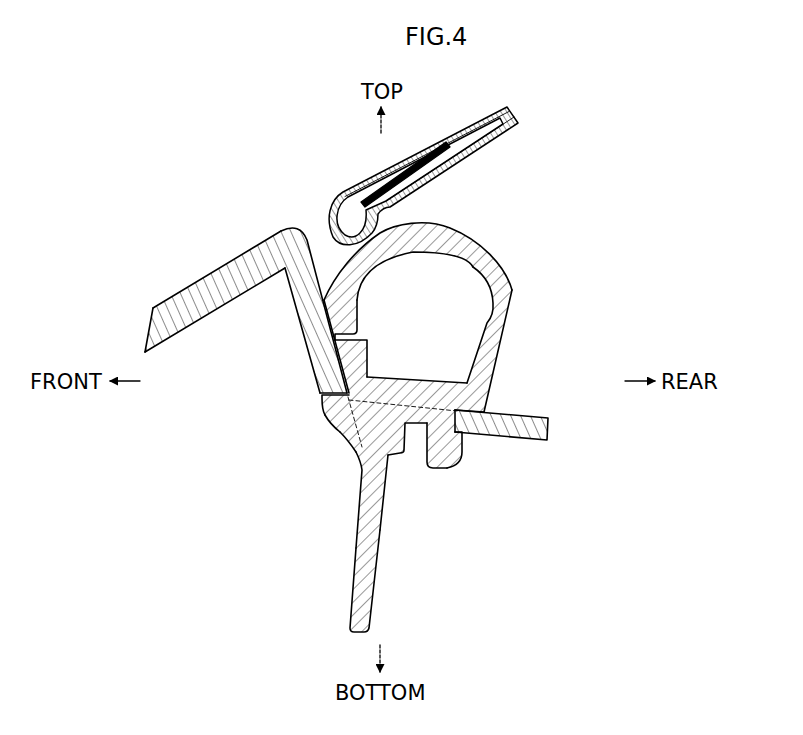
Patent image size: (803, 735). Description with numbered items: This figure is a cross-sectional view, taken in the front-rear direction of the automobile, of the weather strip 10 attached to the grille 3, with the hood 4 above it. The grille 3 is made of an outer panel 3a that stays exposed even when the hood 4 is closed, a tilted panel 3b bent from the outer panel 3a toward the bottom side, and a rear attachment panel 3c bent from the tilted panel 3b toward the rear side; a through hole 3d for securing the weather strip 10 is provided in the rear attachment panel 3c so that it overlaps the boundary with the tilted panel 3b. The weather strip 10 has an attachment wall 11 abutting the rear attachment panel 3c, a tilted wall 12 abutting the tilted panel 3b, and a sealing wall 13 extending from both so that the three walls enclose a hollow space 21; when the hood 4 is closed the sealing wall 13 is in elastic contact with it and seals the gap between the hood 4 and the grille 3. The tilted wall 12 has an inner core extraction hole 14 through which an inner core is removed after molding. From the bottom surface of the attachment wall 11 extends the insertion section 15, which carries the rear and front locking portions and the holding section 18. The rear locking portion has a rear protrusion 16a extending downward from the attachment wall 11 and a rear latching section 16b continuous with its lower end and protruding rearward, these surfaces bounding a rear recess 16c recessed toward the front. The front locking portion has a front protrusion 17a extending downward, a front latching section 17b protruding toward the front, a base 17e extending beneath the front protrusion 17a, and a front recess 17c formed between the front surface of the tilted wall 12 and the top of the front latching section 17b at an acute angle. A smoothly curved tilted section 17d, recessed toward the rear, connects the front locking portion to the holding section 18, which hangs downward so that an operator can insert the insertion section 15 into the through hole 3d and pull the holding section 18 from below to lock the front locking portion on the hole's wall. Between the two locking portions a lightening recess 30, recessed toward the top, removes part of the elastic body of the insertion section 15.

The grille 3 is at (355, 346).
The outer panel 3a is at (215, 270).
The tilted panel 3b is at (306, 324).
The rear attachment panel 3c is at (528, 418).
The through hole 3d is at (323, 399).
The hood 4 is at (371, 178).
The weather strip 10 is at (423, 426).
The attachment wall 11 is at (418, 377).
The tilted wall 12 is at (325, 363).
The sealing wall 13 is at (505, 304).
The inner core extraction hole 14 is at (345, 345).
The insertion section 15 is at (339, 513).
The rear protrusion 16a is at (441, 468).
The rear latching section 16b is at (462, 446).
The rear recess 16c is at (488, 409).
The front protrusion 17a is at (388, 444).
The front latching section 17b is at (323, 412).
The front recess 17c is at (333, 430).
The tilted section 17d is at (357, 449).
The base 17e is at (362, 466).
The holding section 18 is at (371, 614).
The hollow space 21 is at (437, 268).
The lightening recess 30 is at (413, 440).